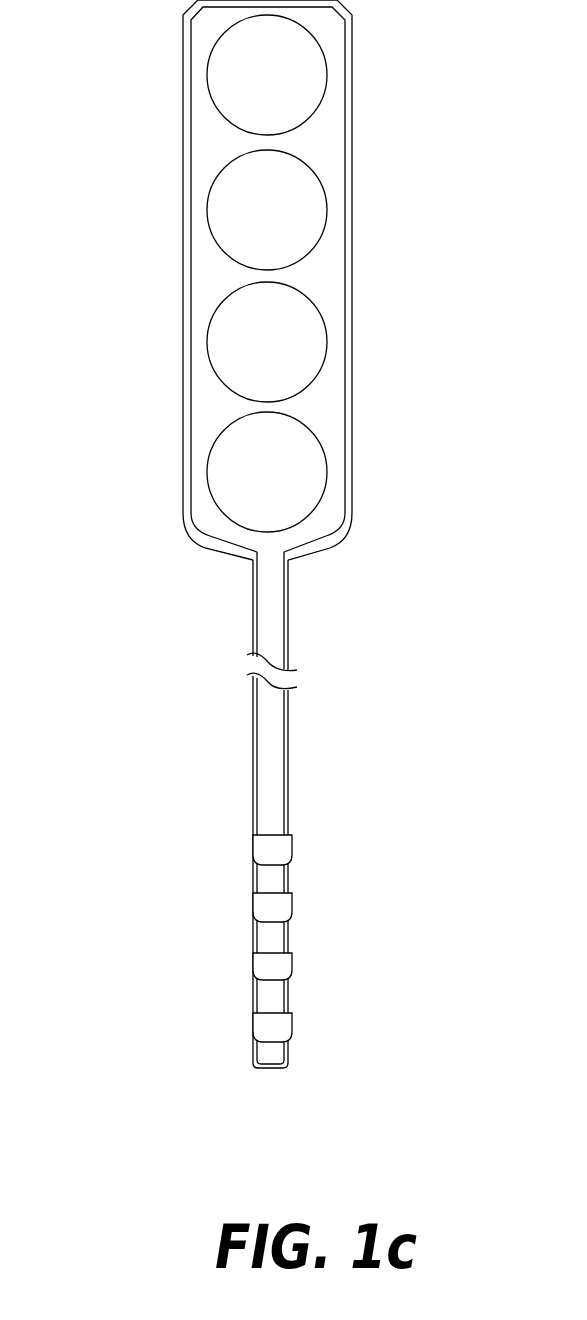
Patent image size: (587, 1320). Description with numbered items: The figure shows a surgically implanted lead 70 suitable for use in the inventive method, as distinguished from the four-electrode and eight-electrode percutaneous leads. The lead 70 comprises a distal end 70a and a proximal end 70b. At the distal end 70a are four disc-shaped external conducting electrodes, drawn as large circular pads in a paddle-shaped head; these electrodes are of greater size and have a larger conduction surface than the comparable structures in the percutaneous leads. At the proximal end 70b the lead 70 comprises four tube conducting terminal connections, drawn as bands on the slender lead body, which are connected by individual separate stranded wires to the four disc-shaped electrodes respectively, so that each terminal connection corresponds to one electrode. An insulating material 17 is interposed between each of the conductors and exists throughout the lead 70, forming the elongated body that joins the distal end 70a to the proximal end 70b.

The insulating material 17 is at (272, 793).
The surgically implanted lead 70 is at (165, 517).
The distal end 70a is at (154, 173).
The proximal end 70b is at (238, 958).